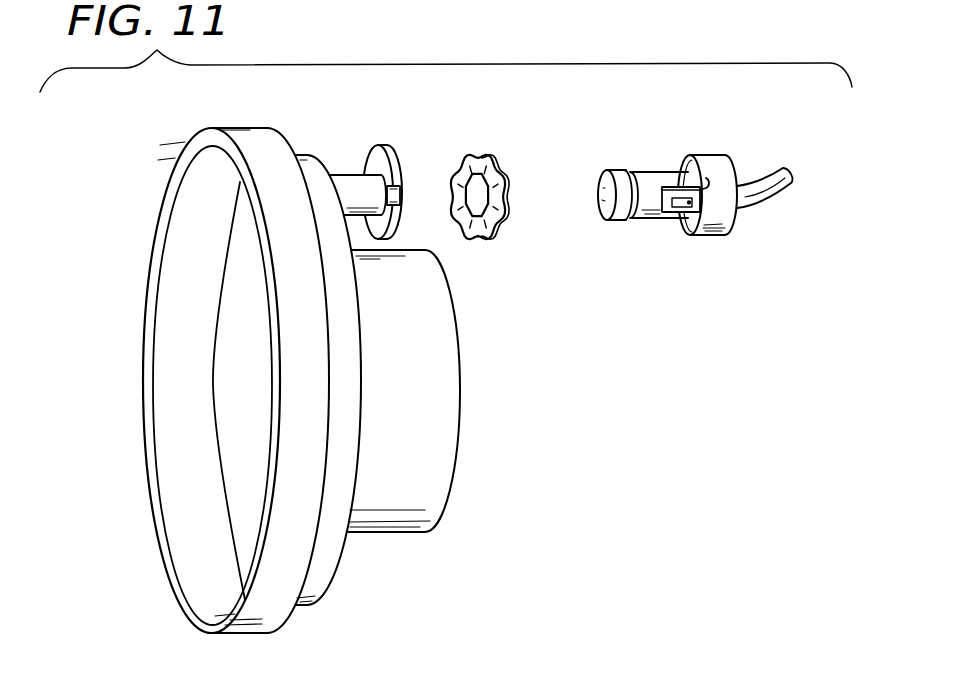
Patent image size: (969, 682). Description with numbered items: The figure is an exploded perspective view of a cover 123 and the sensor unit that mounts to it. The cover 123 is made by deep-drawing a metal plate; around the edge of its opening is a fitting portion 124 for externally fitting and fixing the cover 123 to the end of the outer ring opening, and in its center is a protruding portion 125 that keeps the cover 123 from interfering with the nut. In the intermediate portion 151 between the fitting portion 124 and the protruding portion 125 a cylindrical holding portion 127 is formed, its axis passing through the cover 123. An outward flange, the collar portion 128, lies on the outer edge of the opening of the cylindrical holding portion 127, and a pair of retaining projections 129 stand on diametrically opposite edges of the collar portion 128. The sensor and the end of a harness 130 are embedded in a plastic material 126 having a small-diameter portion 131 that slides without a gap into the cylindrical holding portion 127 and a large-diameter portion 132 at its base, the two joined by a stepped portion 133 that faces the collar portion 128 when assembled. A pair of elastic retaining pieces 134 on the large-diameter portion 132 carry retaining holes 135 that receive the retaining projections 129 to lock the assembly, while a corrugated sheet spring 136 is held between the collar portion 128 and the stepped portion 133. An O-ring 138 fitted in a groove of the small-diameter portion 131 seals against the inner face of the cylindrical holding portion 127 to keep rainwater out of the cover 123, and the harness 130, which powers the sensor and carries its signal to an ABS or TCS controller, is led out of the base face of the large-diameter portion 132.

The cover 123 is at (341, 389).
The fitting portion 124 is at (273, 607).
The intermediate portion 151 is at (338, 577).
The protruding portion 125 is at (437, 510).
The cylindrical holding portion 127 is at (347, 185).
The collar portion 128 is at (380, 145).
The retaining projections 129 is at (401, 191).
The corrugated sheet spring 136 is at (483, 150).
The plastic material 126 is at (702, 200).
The O-ring 138 is at (611, 168).
The small-diameter portion 131 is at (642, 172).
The elastic retaining pieces 134 is at (647, 218).
The stepped portion 133 is at (692, 158).
The large-diameter portion 132 is at (728, 155).
The retaining holes 135 is at (715, 210).
The harness 130 is at (782, 170).